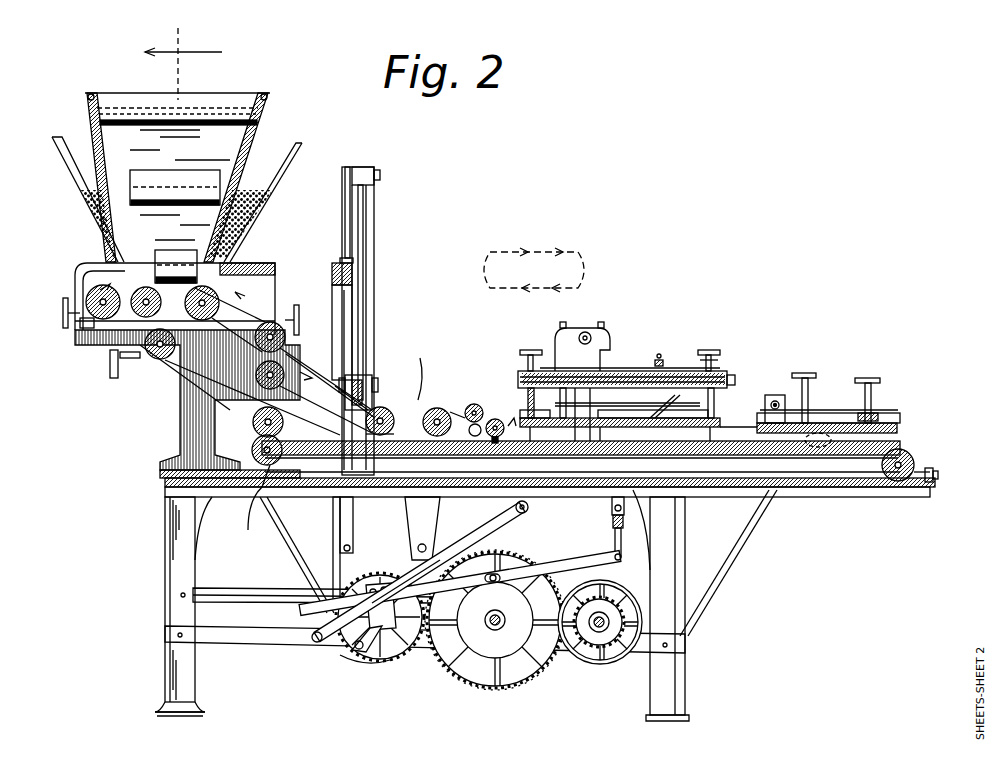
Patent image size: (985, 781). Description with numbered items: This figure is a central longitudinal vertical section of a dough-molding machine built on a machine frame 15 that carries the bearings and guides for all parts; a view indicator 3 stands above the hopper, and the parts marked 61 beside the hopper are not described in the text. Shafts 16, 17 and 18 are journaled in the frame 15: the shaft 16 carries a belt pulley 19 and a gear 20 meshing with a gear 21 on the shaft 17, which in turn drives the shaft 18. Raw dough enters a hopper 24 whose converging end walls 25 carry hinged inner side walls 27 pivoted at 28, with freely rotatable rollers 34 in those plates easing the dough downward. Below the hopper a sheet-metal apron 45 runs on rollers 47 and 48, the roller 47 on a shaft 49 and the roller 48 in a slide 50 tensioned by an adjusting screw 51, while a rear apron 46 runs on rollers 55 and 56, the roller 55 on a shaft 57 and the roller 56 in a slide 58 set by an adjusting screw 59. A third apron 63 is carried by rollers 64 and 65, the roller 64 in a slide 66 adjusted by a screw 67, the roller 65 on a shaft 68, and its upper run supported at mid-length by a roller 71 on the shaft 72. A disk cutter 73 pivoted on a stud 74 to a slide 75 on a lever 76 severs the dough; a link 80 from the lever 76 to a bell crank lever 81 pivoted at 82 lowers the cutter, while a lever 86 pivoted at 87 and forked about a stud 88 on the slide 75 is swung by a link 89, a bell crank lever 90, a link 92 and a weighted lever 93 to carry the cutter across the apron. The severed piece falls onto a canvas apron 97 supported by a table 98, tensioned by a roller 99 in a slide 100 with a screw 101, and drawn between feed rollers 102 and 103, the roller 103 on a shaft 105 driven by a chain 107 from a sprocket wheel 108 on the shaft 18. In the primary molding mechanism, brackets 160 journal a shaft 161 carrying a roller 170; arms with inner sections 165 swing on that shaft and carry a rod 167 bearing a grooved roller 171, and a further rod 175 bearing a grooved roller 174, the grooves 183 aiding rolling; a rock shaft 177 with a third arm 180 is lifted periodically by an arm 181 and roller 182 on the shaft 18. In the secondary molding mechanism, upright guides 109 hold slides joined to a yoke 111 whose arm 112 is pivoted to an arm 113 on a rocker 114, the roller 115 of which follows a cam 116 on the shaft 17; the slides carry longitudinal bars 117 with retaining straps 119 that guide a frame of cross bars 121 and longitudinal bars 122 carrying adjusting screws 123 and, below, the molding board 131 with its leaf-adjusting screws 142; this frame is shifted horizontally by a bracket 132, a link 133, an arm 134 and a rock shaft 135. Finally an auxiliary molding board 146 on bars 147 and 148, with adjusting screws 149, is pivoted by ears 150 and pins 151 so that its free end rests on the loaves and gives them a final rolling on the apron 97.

The section line 3 is at (183, 54).
The machine frame 15 is at (196, 528).
The shaft 16 is at (603, 630).
The shaft 17 is at (500, 630).
The shaft 18 is at (382, 632).
The belt pulley 19 is at (643, 615).
The gear 20 is at (612, 605).
The gear 21 is at (492, 692).
The hopper 24 is at (177, 95).
The end walls 25 is at (100, 119).
The inner side walls 27 is at (220, 138).
The hinge 28 is at (95, 92).
The rollers 34 is at (147, 168).
The apron 45 is at (102, 268).
The apron 46 is at (250, 308).
The roller 47 is at (187, 390).
The roller 48 is at (86, 300).
The shaft 49 is at (158, 296).
The slide 50 is at (100, 335).
The adjusting screw 51 is at (64, 325).
The roller 55 is at (286, 333).
The roller 56 is at (230, 299).
The shaft 57 is at (284, 346).
The slide 58 is at (214, 308).
The adjusting screw 59 is at (300, 315).
The outer hopper wall 61 is at (70, 165).
The third apron 63 is at (368, 390).
The roller 64 is at (142, 345).
The roller 65 is at (388, 412).
The slide 66 is at (170, 375).
The adjusting screw 67 is at (118, 372).
The shaft 68 is at (390, 425).
The roller 71 is at (284, 384).
The shaft 72 is at (279, 400).
The cutter 73 is at (346, 322).
The stud 74 is at (330, 386).
The slide 75 is at (360, 338).
The lever 76 is at (362, 353).
The link 80 is at (353, 510).
The bell crank lever 81 is at (390, 545).
The pivot 82 is at (422, 544).
The lever 86 is at (370, 252).
The pivot 87 is at (378, 170).
The stud 88 is at (378, 342).
The link 89 is at (364, 218).
The bell crank lever 90 is at (347, 238).
The link 92 is at (333, 560).
The lever 93 is at (268, 595).
The fourth apron 97 is at (630, 478).
The table 98 is at (555, 458).
The roller 99 is at (912, 455).
The slide 100 is at (905, 480).
The adjusting screw 101 is at (938, 478).
The feed roller 102 is at (254, 416).
The feed roller 103 is at (253, 450).
The shaft 105 is at (254, 497).
The chain 107 is at (296, 546).
The sprocket wheel 108 is at (372, 663).
The upright guides 109 is at (630, 436).
The yoke 111 is at (610, 511).
The arm 112 is at (614, 532).
The arm 113 is at (466, 580).
The rocker 114 is at (330, 642).
The roller 115 is at (495, 574).
The cam 116 is at (480, 645).
The longitudinal bars 117 is at (731, 386).
The retaining straps 119 is at (712, 358).
The cross bars 121 is at (530, 371).
The longitudinal bars 122 is at (640, 372).
The adjusting screws 123 is at (528, 364).
The molding board 131 is at (718, 430).
The bracket 132 is at (661, 357).
The link 133 is at (630, 368).
The arm 134 is at (565, 360).
The rock shaft 135 is at (586, 332).
The adjusting screws 142 is at (560, 398).
The auxiliary molding board 146 is at (898, 428).
The bars 147 is at (760, 418).
The bars 148 is at (812, 410).
The adjusting screws 149 is at (806, 380).
The ears 150 is at (772, 398).
The pins 151 is at (778, 400).
The brackets 160 is at (435, 462).
The shaft 161 is at (436, 408).
The inner sections 165 is at (452, 410).
The rod 167 is at (474, 404).
The roller 170 is at (429, 372).
The second roller 171 is at (478, 424).
The third roller 174 is at (498, 419).
The rod 175 is at (510, 434).
The rock shaft 177 is at (527, 509).
The third arm 180 is at (482, 530).
The arm 181 is at (360, 655).
The roller 182 is at (368, 632).
The grooves 183 is at (498, 419).